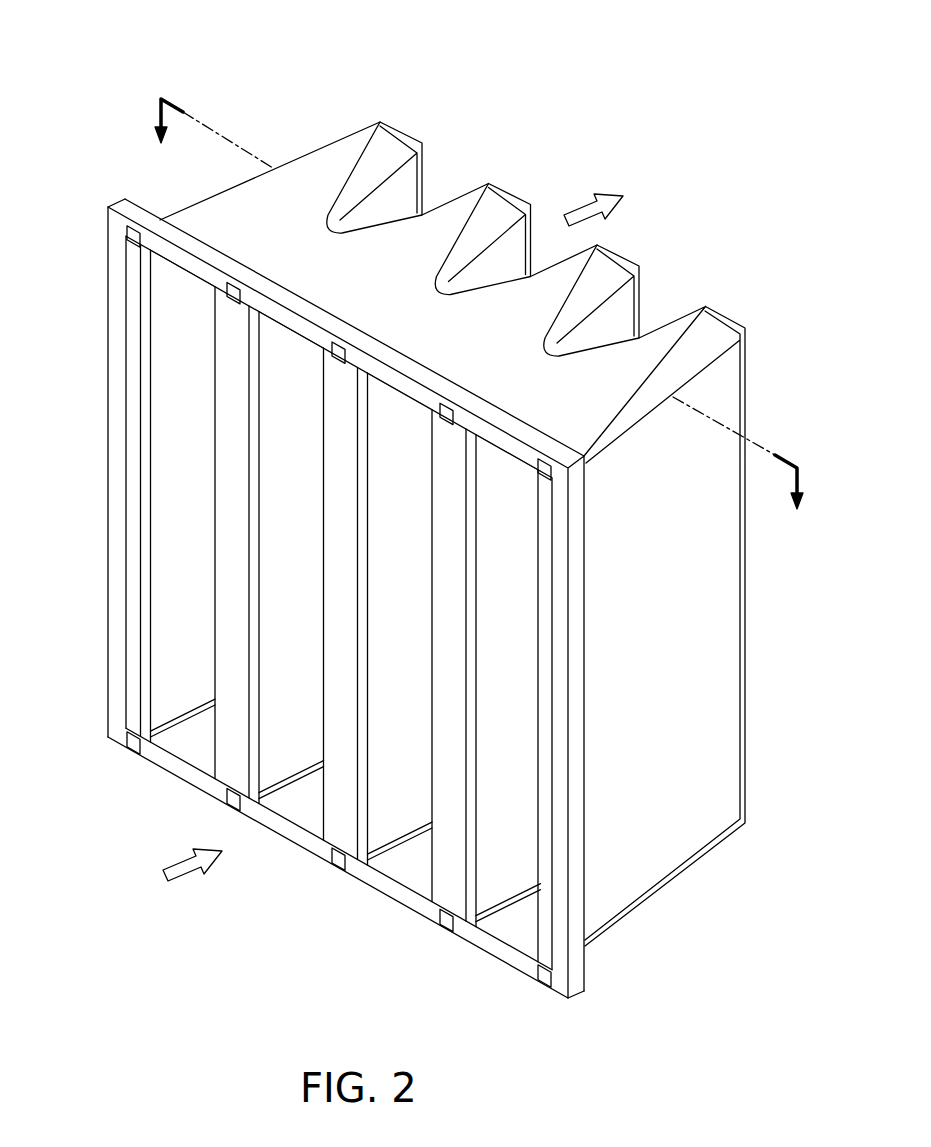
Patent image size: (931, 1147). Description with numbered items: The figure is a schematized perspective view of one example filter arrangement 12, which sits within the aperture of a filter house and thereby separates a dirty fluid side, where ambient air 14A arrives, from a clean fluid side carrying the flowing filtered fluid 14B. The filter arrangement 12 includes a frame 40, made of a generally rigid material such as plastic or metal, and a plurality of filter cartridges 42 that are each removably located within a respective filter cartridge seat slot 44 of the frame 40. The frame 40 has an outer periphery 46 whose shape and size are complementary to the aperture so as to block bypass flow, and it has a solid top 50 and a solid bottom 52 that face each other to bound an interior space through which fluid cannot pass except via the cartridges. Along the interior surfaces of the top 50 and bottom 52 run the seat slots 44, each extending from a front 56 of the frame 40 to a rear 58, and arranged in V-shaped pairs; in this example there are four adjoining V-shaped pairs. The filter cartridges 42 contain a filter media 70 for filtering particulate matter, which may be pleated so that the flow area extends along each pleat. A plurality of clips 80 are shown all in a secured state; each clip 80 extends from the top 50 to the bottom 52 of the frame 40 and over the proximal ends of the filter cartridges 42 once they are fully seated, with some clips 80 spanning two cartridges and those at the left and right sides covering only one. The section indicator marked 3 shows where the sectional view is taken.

The filter arrangement 12 is at (240, 104).
The frame 40 is at (176, 186).
The filter cartridges 42 is at (405, 185).
The filter cartridge seat slots 44 is at (411, 834).
The outer periphery 46 is at (111, 200).
The top 50 is at (312, 158).
The bottom 52 is at (205, 763).
The front 56 is at (150, 752).
The rear 58 is at (616, 262).
The filter media 70 is at (700, 583).
The clips 80 is at (132, 388).
The section line 3- 3 is at (480, 309).
The ambient air 14A is at (200, 884).
The filtered fluid 14B is at (600, 193).